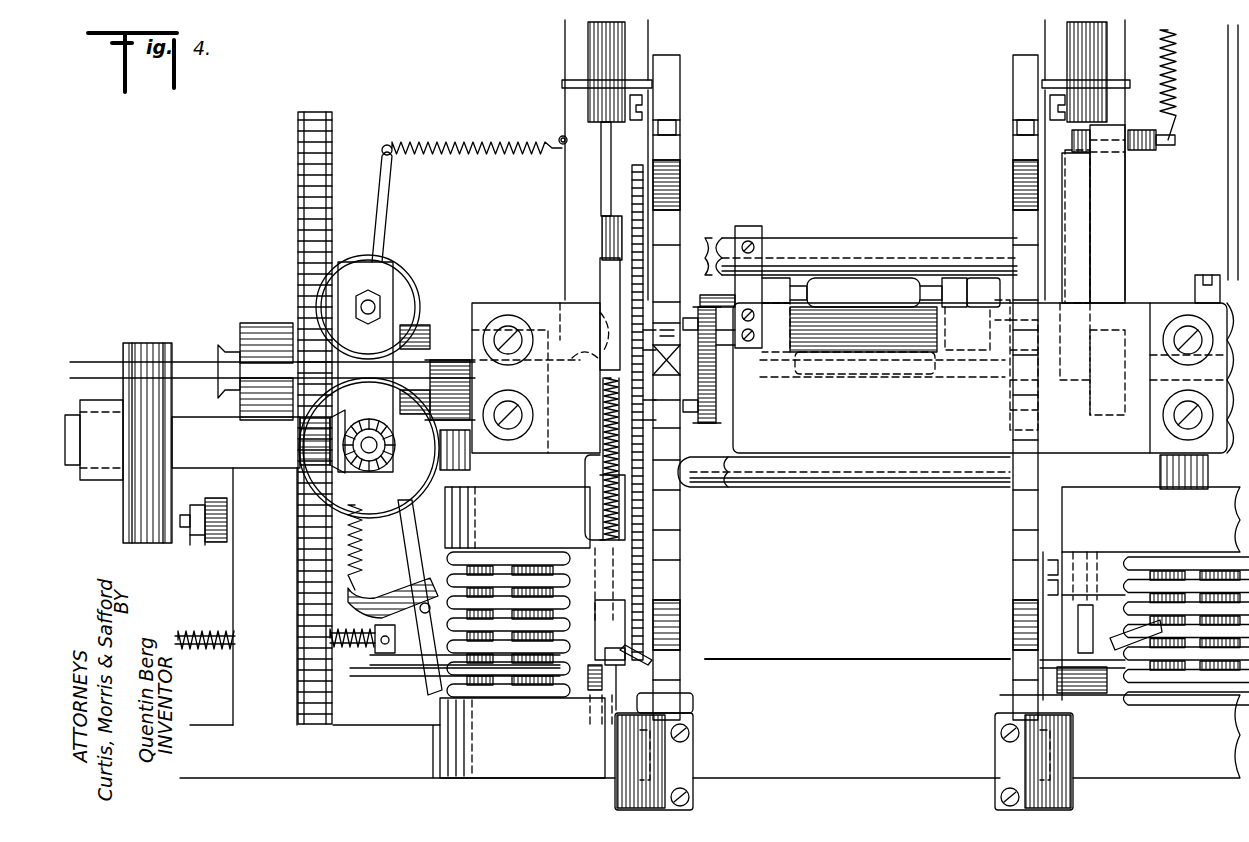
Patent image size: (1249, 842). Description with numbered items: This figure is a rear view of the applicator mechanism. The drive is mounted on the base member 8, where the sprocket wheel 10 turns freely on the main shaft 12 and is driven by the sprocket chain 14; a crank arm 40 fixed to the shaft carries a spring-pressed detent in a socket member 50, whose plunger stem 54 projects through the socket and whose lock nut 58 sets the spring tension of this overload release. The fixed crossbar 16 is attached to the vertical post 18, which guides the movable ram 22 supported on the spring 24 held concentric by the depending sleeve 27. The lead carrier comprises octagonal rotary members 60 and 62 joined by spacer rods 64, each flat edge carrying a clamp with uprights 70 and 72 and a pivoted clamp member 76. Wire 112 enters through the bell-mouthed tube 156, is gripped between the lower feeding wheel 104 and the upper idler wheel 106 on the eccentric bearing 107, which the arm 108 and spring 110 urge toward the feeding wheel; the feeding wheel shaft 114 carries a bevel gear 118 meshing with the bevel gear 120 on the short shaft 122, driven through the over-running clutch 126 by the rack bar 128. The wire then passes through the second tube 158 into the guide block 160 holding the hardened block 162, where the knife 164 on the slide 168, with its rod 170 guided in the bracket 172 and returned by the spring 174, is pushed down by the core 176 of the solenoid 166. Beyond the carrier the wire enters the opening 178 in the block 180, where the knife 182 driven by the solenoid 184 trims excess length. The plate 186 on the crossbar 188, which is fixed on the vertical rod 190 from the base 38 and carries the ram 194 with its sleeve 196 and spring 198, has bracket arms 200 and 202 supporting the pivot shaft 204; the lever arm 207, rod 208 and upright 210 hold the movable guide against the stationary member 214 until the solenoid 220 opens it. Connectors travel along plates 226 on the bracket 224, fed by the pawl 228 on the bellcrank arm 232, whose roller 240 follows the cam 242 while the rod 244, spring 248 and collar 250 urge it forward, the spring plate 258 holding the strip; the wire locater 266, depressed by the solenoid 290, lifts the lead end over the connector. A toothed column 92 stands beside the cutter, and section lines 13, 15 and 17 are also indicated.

The base member 8 is at (522, 738).
The sprocket wheel 10 is at (297, 160).
The main shaft 12 is at (165, 335).
The section line 13 is at (118, 384).
The sprocket chain 14 is at (312, 668).
The section line 15 is at (628, 215).
The crossbar 16 is at (718, 172).
The section line 17 is at (433, 275).
The vertical post 18 is at (455, 450).
The movable crossbar or ram 22 is at (517, 517).
The spring 24 is at (548, 562).
The depending sleeve 27 is at (512, 562).
The base 38 is at (1120, 736).
The crank arm 40 is at (258, 390).
The socket member 50 is at (199, 505).
The stem 54 is at (190, 540).
The lock nut 58 is at (226, 495).
The rotary member 60 is at (678, 134).
The rotary member 62 is at (1018, 132).
The spacer rod 64 is at (842, 242).
The upright 70 is at (672, 78).
The upright 72 is at (672, 633).
The pivoted clamp member 76 is at (672, 672).
The toothed column 92 is at (640, 168).
The lower feeding wheel 104 is at (358, 522).
The upper idler or presser wheel 106 is at (362, 262).
The eccentrically mounted ball bearing 107 is at (400, 292).
The arm 108 is at (388, 178).
The spring 110 is at (458, 148).
The wire 112 is at (110, 362).
The shaft 114 is at (378, 447).
The bevel gear 118 is at (378, 465).
The bevel gear 120 is at (342, 470).
The short shaft 122 is at (298, 437).
The over-running clutch 126 is at (92, 465).
The rack bar 128 is at (148, 490).
The tube 156 is at (236, 360).
The second bell-mouthed tube 158 is at (505, 377).
The guide block 160 is at (555, 303).
The block of hardened material 162 is at (582, 356).
The knife 164 is at (600, 318).
The solenoid 166 is at (596, 15).
The slide 168 is at (604, 238).
The rod 170 is at (603, 396).
The bracket 172 is at (590, 478).
The spring 174 is at (603, 421).
The solenoid core 176 is at (604, 140).
The opening 178 is at (1100, 380).
The block 180 is at (1112, 415).
The knife 182 is at (1082, 300).
The solenoid 184 is at (1080, 28).
The plate or arm 186 is at (745, 432).
The crossbar 188 is at (1183, 164).
The vertical rod 190 is at (1170, 466).
The movable crossbar or ram 194 is at (1141, 593).
The depending sleeve 196 is at (1182, 590).
The spring 198 is at (1228, 690).
The bracket arm 200 is at (955, 295).
The bracket arm 202 is at (778, 292).
The pivot shaft 204 is at (922, 298).
The lever arm 207 is at (738, 226).
The rod or link 208 is at (752, 243).
The upright 210 is at (735, 280).
The stationary member 214 is at (716, 372).
The solenoid 220 is at (860, 352).
The block or bracket 224 is at (580, 690).
The strip or plate 226 is at (436, 690).
The feed pawl 228 is at (404, 600).
The long arm of bellcrank lever 232 is at (450, 538).
The roller 240 is at (440, 422).
The cam 242 is at (398, 305).
The rod 244 is at (188, 634).
The spring 248 is at (210, 648).
The collar 250 is at (376, 628).
The spring plate 258 is at (410, 668).
The wire locater 266 is at (640, 680).
The solenoid 290 is at (628, 797).